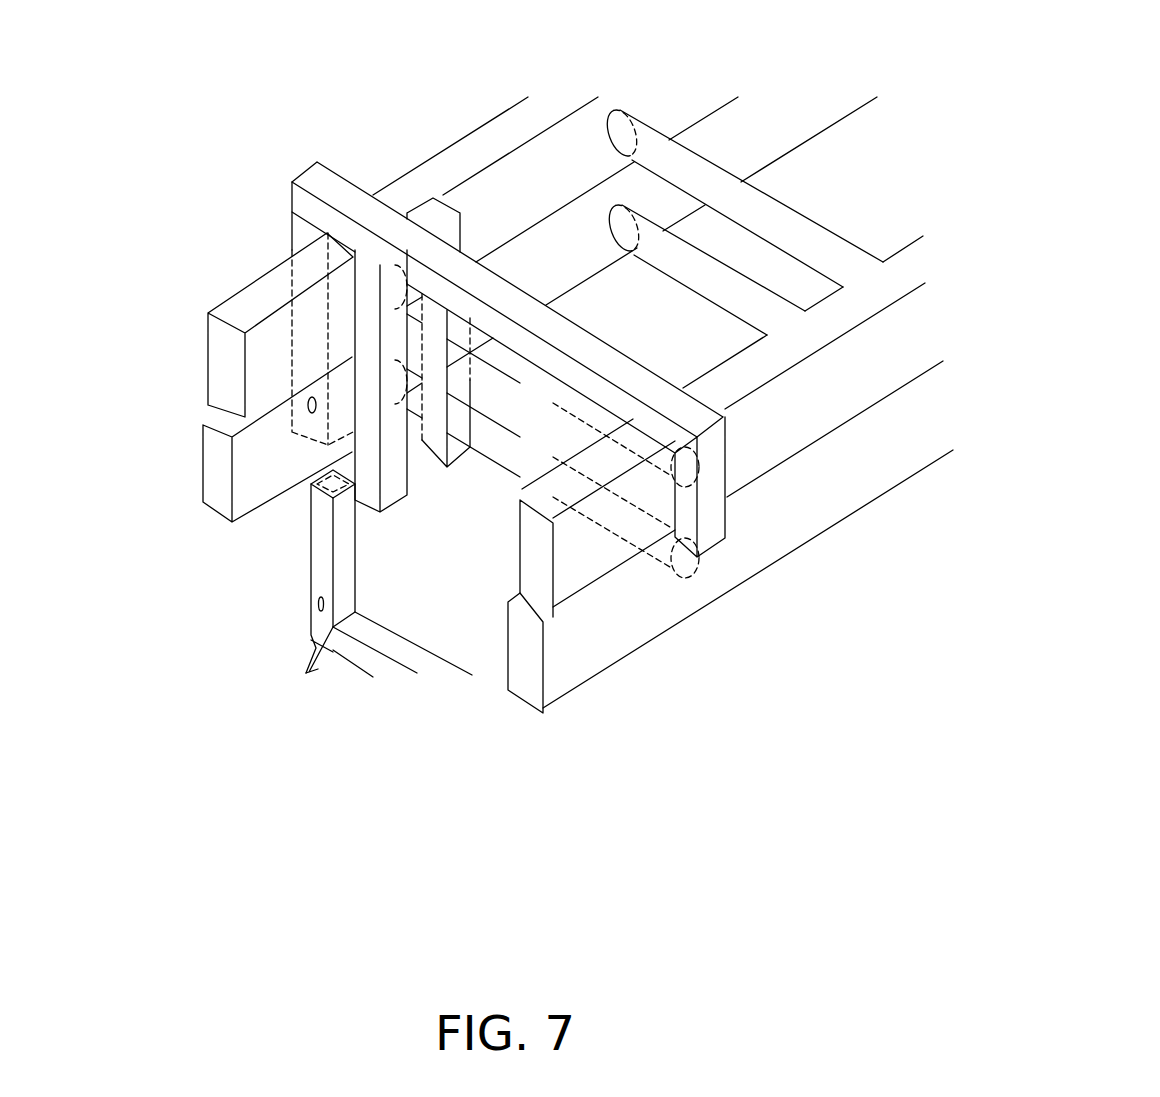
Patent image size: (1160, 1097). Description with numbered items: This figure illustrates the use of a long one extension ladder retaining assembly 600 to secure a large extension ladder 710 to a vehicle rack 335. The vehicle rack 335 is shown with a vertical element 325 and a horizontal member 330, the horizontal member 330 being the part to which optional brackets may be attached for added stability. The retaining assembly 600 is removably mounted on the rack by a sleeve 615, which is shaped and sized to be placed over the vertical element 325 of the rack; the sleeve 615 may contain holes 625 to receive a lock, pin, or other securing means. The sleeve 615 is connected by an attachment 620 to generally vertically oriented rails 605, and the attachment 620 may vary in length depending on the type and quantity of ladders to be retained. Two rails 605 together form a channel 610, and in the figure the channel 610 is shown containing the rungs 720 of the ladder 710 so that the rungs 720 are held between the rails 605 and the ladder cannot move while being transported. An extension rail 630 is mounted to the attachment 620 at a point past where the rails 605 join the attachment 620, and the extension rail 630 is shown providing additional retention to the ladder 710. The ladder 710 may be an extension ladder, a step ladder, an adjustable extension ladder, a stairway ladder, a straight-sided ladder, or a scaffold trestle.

The long one extension ladder retaining assembly 600 is at (337, 150).
The rail 605 is at (385, 428).
The channel 610 is at (417, 473).
The sleeve 615 is at (308, 231).
The attachment 620 is at (508, 285).
The holes 625 is at (308, 414).
The extension rail 630 is at (720, 522).
The ladder 710 is at (767, 444).
The rungs 720 is at (752, 303).
The vertical element 325 is at (325, 563).
The horizontal member 330 is at (433, 667).
The vehicle rack 335 is at (323, 668).